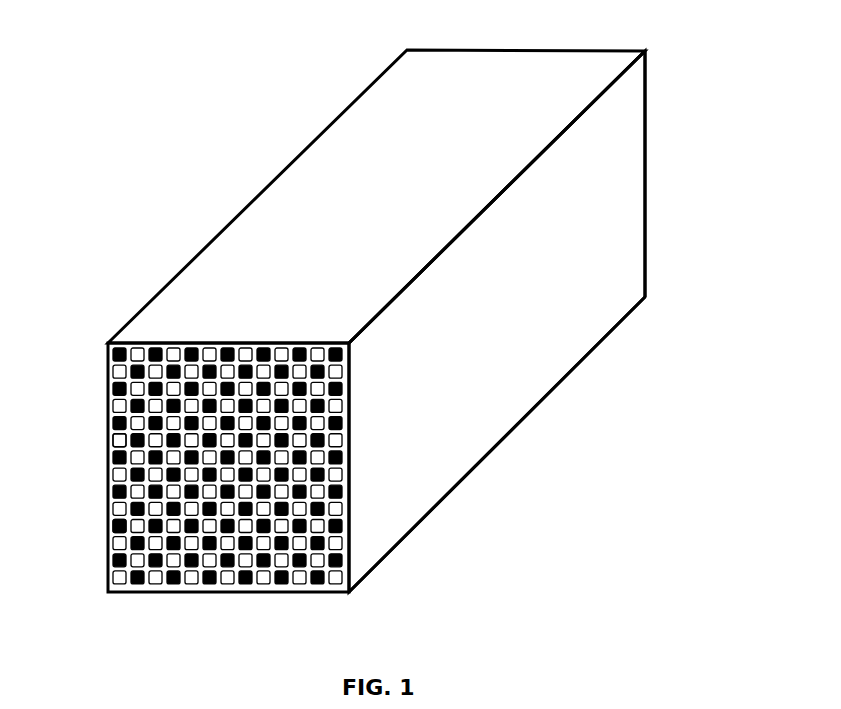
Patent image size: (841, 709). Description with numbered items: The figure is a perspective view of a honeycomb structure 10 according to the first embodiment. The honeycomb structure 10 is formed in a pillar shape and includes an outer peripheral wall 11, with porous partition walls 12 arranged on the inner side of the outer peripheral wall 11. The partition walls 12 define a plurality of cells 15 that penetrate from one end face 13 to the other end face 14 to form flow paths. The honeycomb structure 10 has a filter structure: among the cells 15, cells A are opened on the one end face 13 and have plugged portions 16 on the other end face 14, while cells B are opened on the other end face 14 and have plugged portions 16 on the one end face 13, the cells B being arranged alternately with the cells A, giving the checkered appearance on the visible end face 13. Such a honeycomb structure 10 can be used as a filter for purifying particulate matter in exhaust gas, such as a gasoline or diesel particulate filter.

The honeycomb structure 10 is at (197, 172).
The outer peripheral wall 11 is at (543, 362).
The porous partition walls 12 is at (110, 483).
The one end face 13 is at (349, 592).
The other end face 14 is at (645, 213).
The cells 15 is at (110, 442).
The plugged portions 16 is at (110, 527).